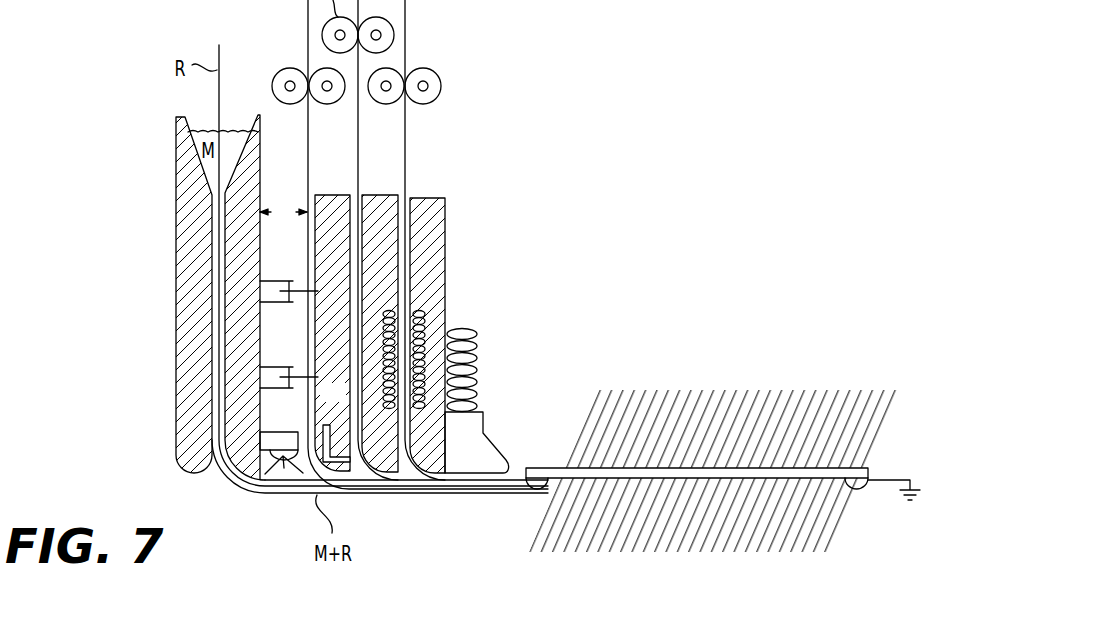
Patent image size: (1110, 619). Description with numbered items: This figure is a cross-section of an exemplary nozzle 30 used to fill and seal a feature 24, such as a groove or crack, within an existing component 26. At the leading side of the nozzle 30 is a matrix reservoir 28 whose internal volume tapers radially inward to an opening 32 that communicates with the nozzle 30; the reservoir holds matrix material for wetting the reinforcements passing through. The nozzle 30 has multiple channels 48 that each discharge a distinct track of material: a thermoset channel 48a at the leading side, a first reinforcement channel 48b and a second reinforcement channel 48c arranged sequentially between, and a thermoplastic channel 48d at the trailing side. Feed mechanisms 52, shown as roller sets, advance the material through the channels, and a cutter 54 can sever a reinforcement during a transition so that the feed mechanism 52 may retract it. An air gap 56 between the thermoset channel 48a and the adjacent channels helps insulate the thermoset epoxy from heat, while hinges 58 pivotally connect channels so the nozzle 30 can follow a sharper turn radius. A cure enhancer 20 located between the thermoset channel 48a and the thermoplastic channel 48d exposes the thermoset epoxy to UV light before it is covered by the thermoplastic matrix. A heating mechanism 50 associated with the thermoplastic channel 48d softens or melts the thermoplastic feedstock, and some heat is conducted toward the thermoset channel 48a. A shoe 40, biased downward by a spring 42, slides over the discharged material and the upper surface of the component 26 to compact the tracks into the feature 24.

The cure enhancer 20 is at (282, 462).
The feature 24 is at (646, 481).
The component 26 is at (637, 454).
The matrix reservoir 28 is at (186, 127).
The nozzle 30 is at (150, 425).
The opening 32 is at (217, 474).
The shoe 40 is at (454, 459).
The spring 42 is at (479, 348).
The channels 48 is at (478, 170).
The thermoset channel 48a is at (213, 233).
The first reinforcement channel 48b is at (309, 195).
The second reinforcement channel 48c is at (360, 195).
The thermoplastic channel 48d is at (407, 197).
The heating mechanism 50 is at (431, 306).
The feed mechanism 52 is at (290, 68).
The cutter 54 is at (327, 425).
The air gap 56 is at (283, 212).
The hinge 58 is at (290, 281).